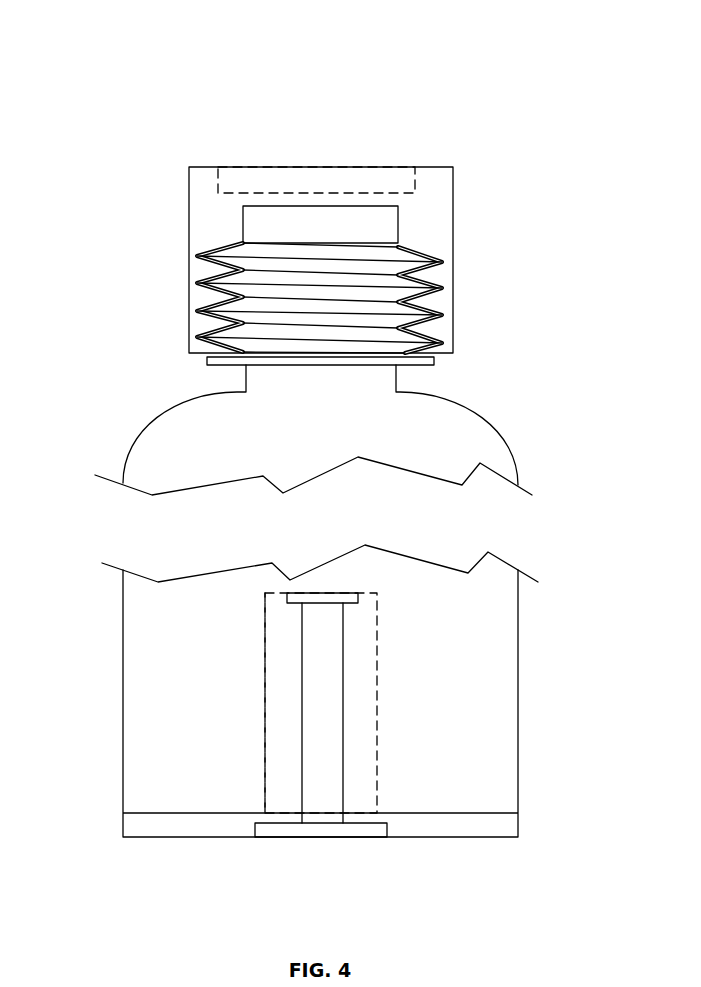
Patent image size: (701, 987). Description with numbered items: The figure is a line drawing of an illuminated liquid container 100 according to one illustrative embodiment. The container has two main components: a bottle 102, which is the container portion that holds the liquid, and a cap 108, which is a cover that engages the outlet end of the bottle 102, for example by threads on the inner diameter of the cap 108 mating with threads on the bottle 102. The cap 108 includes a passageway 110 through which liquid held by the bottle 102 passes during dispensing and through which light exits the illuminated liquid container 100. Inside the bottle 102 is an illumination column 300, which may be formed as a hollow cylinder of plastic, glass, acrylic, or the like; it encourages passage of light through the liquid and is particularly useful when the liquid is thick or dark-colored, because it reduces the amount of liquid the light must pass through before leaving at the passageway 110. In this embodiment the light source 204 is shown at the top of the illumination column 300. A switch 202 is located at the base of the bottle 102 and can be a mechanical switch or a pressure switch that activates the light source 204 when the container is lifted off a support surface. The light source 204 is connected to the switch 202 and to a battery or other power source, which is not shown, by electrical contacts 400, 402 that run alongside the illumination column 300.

The illuminated liquid container 100 is at (505, 58).
The bottle 102 is at (518, 692).
The cap 108 is at (210, 214).
The passageway 110 is at (223, 168).
The switch 202 is at (377, 832).
The light source 204 is at (297, 598).
The illumination column 300 is at (283, 701).
The electrical contact 400 is at (343, 631).
The electrical contact 402 is at (300, 630).